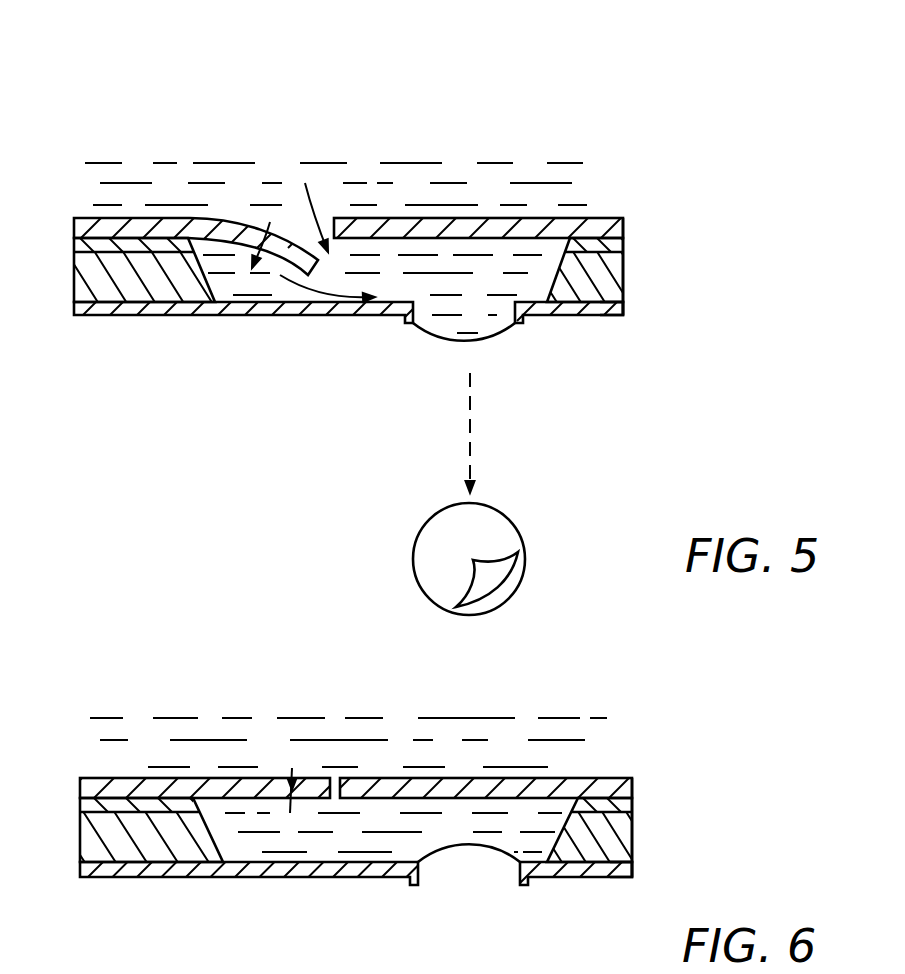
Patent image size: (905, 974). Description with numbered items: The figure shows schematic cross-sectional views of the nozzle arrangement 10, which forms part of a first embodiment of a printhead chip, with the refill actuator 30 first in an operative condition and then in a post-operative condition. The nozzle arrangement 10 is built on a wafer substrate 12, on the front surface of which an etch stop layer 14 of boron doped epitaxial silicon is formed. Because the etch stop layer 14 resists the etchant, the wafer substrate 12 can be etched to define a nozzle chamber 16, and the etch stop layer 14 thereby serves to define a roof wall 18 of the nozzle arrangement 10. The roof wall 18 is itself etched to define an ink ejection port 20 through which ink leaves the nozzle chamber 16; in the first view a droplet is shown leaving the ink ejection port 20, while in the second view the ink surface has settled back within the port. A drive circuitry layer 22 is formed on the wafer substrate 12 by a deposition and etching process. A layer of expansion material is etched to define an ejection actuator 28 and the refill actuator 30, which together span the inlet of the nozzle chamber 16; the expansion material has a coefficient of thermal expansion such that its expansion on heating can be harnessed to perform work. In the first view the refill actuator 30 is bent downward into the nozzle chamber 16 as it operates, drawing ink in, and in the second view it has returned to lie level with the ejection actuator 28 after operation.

In FIG. 5, the nozzle arrangement 10 is at (223, 118).
In FIG. 6, the nozzle arrangement 10 is at (137, 657).
In FIG. 5, the wafer substrate 12 is at (617, 295).
In FIG. 6, the wafer substrate 12 is at (625, 853).
In FIG. 5, the etch stop layer 14 is at (622, 315).
In FIG. 6, the etch stop layer 14 is at (632, 877).
In FIG. 5, the nozzle chamber 16 is at (540, 274).
In FIG. 6, the nozzle chamber 16 is at (540, 818).
In FIG. 5, the roof wall 18 is at (195, 317).
In FIG. 6, the roof wall 18 is at (252, 877).
In FIG. 5, the ink ejection port 20 is at (448, 320).
In FIG. 6, the ink ejection port 20 is at (437, 870).
In FIG. 5, the drive circuitry layer 22 is at (626, 248).
In FIG. 6, the drive circuitry layer 22 is at (633, 802).
In FIG. 5, the ejection actuator 28 is at (587, 233).
In FIG. 6, the ejection actuator 28 is at (572, 788).
In FIG. 5, the refill actuator 30 is at (144, 222).
In FIG. 6, the refill actuator 30 is at (198, 790).